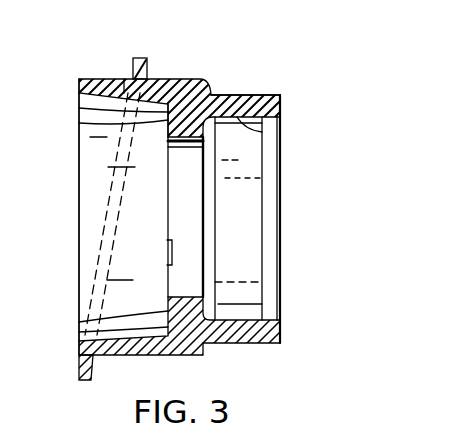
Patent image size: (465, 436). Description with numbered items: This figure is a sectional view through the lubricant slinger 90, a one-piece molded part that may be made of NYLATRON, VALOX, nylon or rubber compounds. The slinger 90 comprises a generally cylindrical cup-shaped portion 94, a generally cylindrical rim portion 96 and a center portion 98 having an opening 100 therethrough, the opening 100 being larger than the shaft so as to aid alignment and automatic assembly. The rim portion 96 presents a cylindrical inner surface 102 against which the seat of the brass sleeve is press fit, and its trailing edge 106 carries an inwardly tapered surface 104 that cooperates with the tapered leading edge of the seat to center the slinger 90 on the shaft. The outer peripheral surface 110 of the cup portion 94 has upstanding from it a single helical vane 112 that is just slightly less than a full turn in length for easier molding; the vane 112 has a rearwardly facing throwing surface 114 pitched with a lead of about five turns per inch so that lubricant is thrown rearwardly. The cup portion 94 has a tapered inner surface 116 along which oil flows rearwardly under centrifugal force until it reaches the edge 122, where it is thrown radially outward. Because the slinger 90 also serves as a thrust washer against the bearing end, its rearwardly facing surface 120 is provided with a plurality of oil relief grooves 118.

The lubricant slinger 90 is at (192, 52).
The cup-shaped portion 94 is at (97, 79).
The rim portion 96 is at (246, 96).
The center portion 98 is at (186, 92).
The opening 100 is at (182, 297).
The cylindrical inner surface 102 is at (262, 135).
The inwardly tapered surface 104 is at (275, 330).
The trailing edge 106 is at (281, 96).
The outer peripheral surface 110 is at (107, 356).
The helical vane 112 is at (142, 58).
The throwing surface 114 is at (128, 80).
The tapered inner surface 116 is at (80, 107).
The oil relief grooves 118 is at (79, 123).
The rearwardly facing surface 120 is at (79, 321).
The edge 122 is at (79, 85).